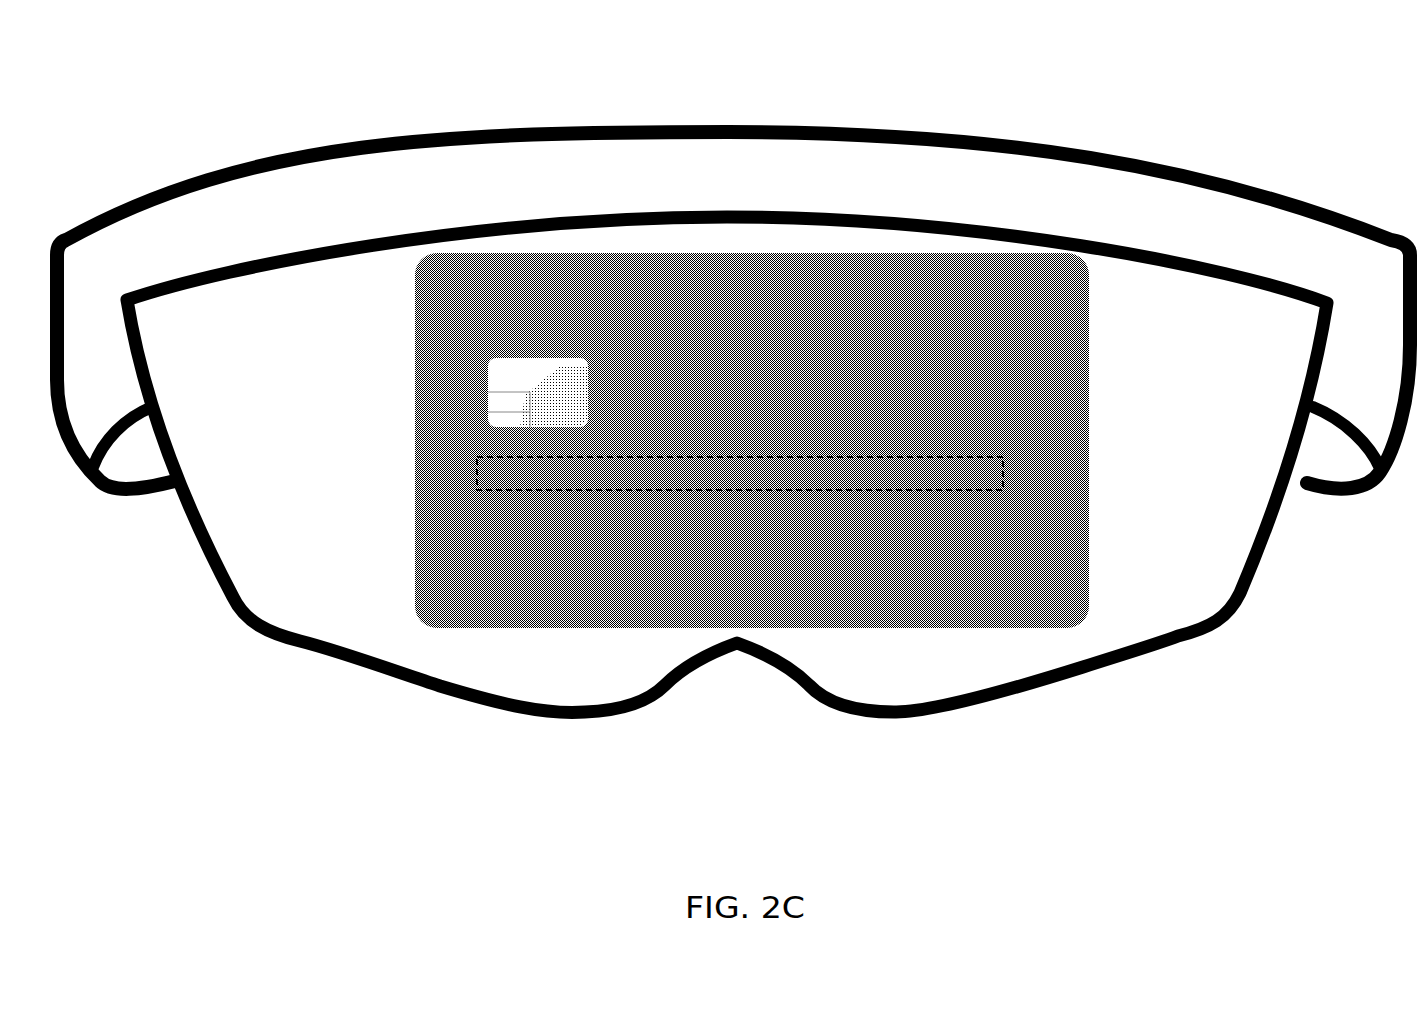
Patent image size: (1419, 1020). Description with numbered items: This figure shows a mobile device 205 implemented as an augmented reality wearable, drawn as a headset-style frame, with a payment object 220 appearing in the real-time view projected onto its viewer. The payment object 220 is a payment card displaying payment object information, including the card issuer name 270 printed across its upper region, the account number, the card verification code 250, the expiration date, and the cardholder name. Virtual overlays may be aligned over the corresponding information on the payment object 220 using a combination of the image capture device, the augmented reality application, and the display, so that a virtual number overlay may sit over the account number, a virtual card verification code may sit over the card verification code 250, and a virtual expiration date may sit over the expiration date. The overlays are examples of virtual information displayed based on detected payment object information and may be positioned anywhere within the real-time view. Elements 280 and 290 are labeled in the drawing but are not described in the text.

The mobile device 205 is at (243, 33).
The payment object 220 is at (413, 337).
The card issuer name 270 is at (470, 468).
The card security code 280 is at (473, 512).
The card verification code 250 is at (475, 558).
The expiration date 290 is at (817, 550).